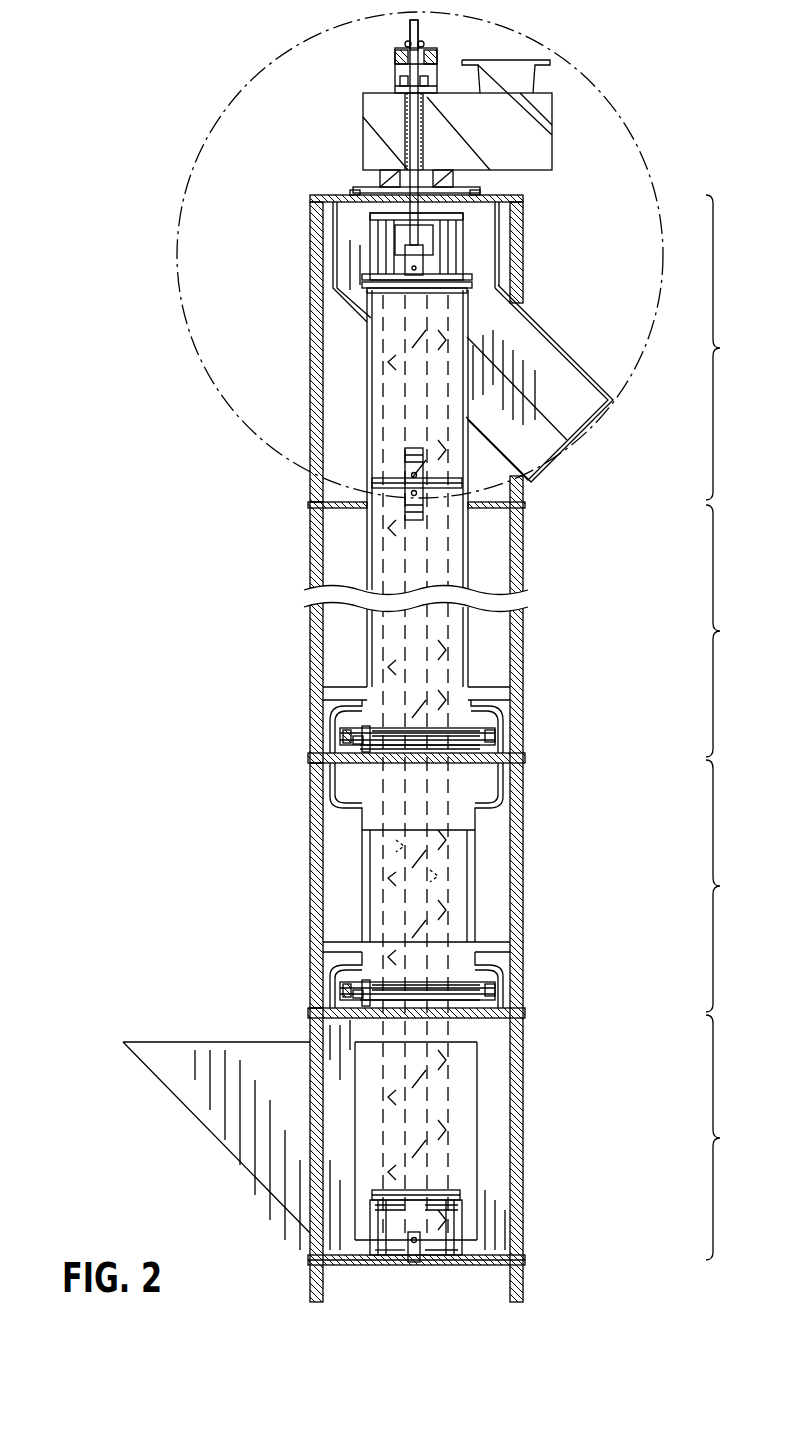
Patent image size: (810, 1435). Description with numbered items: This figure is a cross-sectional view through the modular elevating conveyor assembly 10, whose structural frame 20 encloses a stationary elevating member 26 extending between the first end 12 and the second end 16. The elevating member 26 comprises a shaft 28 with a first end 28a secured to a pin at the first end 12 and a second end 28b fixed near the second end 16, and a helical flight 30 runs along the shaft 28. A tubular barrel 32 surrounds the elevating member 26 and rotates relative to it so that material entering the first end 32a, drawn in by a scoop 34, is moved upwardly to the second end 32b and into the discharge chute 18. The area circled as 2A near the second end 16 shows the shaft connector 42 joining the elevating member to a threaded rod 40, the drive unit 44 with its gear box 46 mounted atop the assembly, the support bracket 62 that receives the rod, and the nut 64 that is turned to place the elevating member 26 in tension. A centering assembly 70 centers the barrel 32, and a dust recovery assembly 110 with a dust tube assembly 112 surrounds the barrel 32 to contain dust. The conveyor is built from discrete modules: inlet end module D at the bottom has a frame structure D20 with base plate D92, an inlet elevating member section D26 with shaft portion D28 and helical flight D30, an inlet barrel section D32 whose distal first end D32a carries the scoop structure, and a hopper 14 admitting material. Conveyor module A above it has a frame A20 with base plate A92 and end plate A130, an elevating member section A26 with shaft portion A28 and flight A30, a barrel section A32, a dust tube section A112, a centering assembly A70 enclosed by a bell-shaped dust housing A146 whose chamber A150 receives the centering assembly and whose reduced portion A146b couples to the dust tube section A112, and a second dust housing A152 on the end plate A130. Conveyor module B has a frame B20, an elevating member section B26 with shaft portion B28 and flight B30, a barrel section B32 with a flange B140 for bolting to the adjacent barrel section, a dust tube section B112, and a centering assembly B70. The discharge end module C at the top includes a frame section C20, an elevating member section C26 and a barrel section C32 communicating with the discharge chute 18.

The elevating conveyor assembly 10 is at (226, 90).
The detail view of second end 2A is at (603, 29).
The first end 12 is at (440, 1265).
The hopper 14 is at (130, 1040).
The second end 16 is at (322, 195).
The discharge chute 18 is at (576, 358).
The structural frame 20 is at (308, 650).
The elevating member 26 is at (380, 875).
The shaft 28 is at (522, 793).
The helical flight 30 is at (440, 575).
The tubular barrel 32 is at (380, 896).
The scoop 34 is at (470, 1200).
The threaded rod 40 is at (412, 22).
The shaft connector 42 is at (462, 483).
The drive unit 44 is at (556, 160).
The gear box 46 is at (470, 145).
The support bracket 62 is at (400, 82).
The nut 64 is at (405, 48).
The centering assembly 70 is at (338, 739).
The dust recovery assembly 110 is at (356, 468).
The dust tube assembly 112 is at (362, 630).
The first end of shaft 28a is at (365, 1265).
The second end of shaft 28b is at (372, 300).
The first end of barrel 32a is at (470, 1265).
The second end of barrel 32b is at (468, 306).
The frame section of discharge end module C20 is at (311, 347).
The elevating member section of discharge end module C26 is at (396, 363).
The barrel section of discharge end module C32 is at (455, 410).
The structural frame of module B B20 is at (310, 672).
The elevating member section of module B B26 is at (478, 648).
The shaft portion of module B B28 is at (368, 548).
The helical flight of module B B30 is at (394, 583).
The barrel section of module B B32 is at (466, 527).
The centering assembly of module B B70 is at (416, 737).
The dust tube section of module B B112 is at (438, 565).
The flange of module B barrel section B140 is at (407, 470).
The structural frame of module A A20 is at (310, 855).
The elevating member section of module A A26 is at (482, 872).
The shaft portion of module A A28 is at (355, 790).
The helical flight of module A A30 is at (380, 843).
The barrel section of module A A32 is at (480, 860).
The centering assembly of module A A70 is at (342, 993).
The base plate of module A A92 is at (503, 1000).
The dust tube section of module A A112 is at (372, 846).
The end plate of module A A130 is at (437, 798).
The dust housing A146 is at (518, 979).
The reduced portion of dust housing A146b is at (505, 956).
The chamber of dust housing A150 is at (364, 975).
The second dust housing A152 is at (474, 812).
The frame structure of inlet end module D20 is at (524, 1078).
The inlet elevating member section D26 is at (477, 1125).
The shaft portion of inlet elevating member section D28 is at (395, 1065).
The helical flight of inlet module D30 is at (425, 1090).
The inlet barrel section D32 is at (483, 1065).
The distal first end of inlet barrel section D32a is at (340, 1205).
The base plate of inlet end module D92 is at (486, 1250).
The conveyor module A is at (725, 886).
The conveyor module B is at (725, 631).
The discharge end module C is at (725, 347).
The inlet end module D is at (726, 1137).